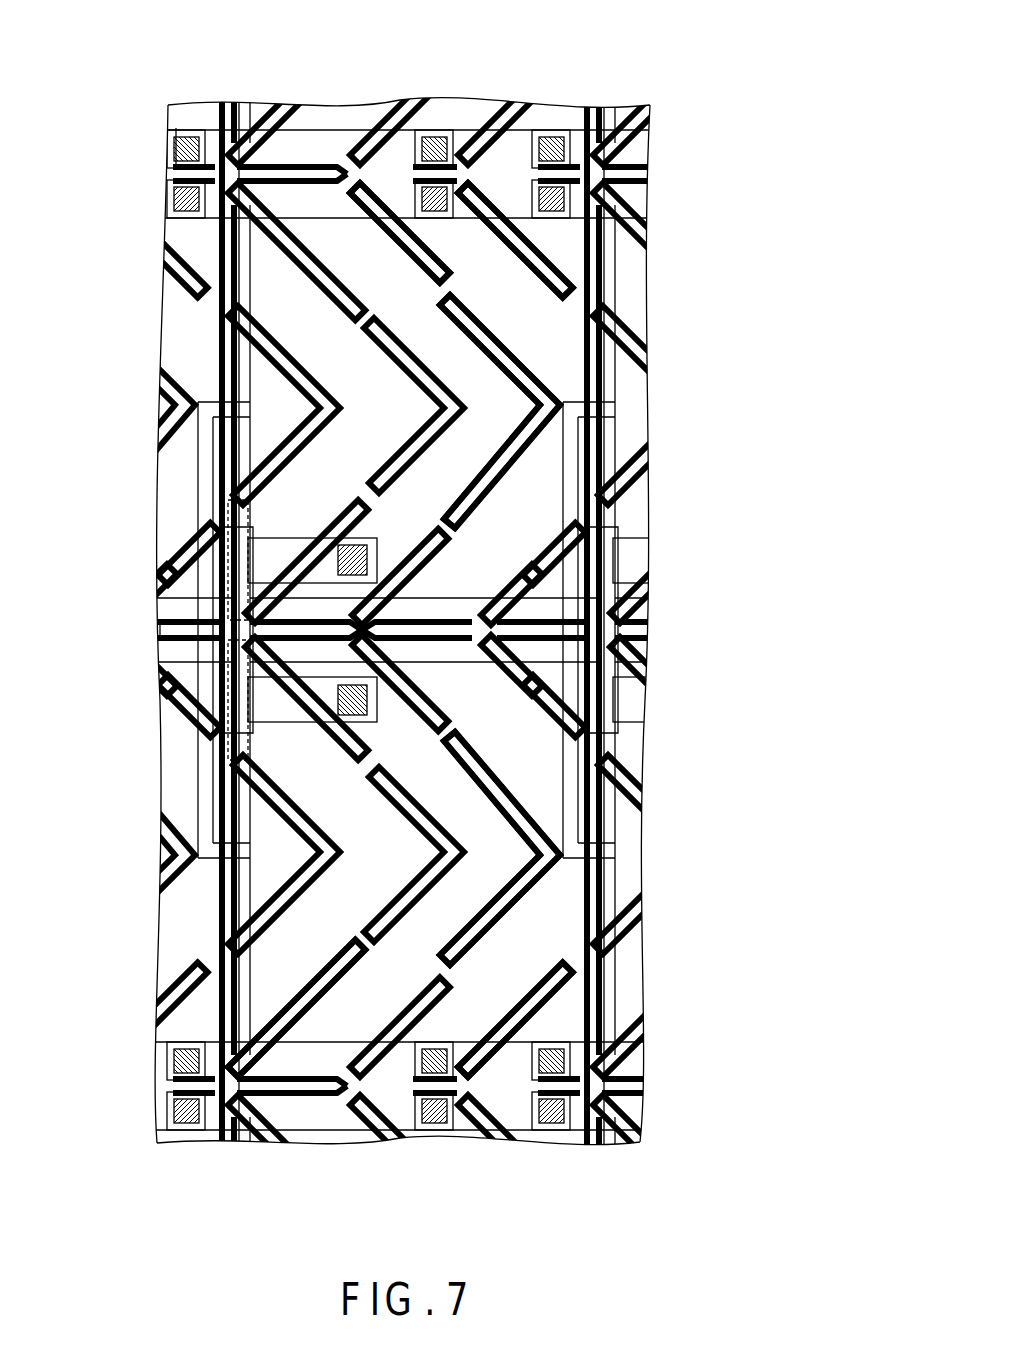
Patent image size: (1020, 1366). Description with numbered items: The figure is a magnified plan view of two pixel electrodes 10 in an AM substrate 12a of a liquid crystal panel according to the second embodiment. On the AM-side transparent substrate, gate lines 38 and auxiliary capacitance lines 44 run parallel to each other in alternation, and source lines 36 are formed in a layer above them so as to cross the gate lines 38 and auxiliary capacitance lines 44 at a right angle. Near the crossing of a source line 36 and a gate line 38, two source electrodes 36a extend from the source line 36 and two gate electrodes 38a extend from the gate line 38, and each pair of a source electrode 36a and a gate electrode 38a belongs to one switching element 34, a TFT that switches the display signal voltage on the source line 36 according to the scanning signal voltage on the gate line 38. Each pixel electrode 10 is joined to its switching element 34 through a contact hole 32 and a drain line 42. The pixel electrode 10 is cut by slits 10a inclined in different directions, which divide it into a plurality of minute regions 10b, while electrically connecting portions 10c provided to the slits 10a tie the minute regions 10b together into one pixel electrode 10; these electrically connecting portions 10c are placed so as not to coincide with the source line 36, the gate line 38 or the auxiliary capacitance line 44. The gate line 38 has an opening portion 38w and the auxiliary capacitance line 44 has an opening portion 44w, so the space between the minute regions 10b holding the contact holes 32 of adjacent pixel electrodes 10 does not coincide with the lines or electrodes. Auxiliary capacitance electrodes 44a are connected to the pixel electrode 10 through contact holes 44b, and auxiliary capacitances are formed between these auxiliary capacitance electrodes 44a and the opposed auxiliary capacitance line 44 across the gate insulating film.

The pixel electrode 10 is at (378, 182).
The slit 10a is at (573, 243).
The minute region 10b is at (573, 263).
The electrically connecting portion 10c is at (575, 287).
The AM substrate 12a is at (741, 80).
The contact hole 32 is at (345, 548).
The switching element 34 is at (232, 497).
The source line 36 is at (227, 108).
The source electrode 36a is at (246, 534).
The gate line 38 is at (180, 614).
The gate electrode 38a is at (253, 555).
The opening portion 38w is at (165, 636).
The drain line 42 is at (255, 572).
The auxiliary capacitance line 44 is at (283, 108).
The auxiliary capacitance electrode 44a is at (437, 148).
The contact hole 44b is at (443, 198).
The opening portion 44w is at (178, 150).